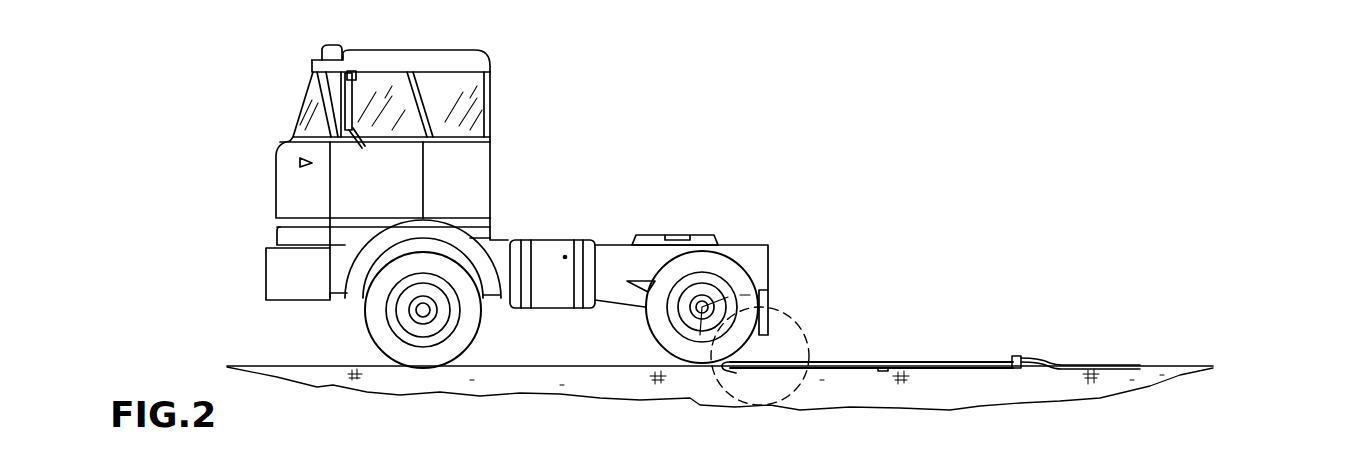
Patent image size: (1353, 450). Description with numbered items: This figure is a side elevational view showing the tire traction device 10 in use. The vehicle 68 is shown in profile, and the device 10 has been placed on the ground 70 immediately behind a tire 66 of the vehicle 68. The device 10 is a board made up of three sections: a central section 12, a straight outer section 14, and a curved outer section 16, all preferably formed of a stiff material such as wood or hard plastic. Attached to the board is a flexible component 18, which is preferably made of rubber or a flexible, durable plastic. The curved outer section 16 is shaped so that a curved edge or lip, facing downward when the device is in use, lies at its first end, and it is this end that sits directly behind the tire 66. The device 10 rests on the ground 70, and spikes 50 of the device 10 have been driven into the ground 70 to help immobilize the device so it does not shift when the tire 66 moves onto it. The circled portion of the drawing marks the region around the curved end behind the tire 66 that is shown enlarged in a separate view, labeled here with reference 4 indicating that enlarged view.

The tire traction device 10 is at (906, 324).
The detail region 4 is at (797, 330).
The central section 12 is at (835, 363).
The straight outer section 14 is at (950, 361).
The curved outer section 16 is at (732, 372).
The flexible component 18 is at (1090, 362).
The spikes 50 is at (882, 370).
The tire 66 is at (722, 262).
The vehicle 68 is at (475, 177).
The ground 70 is at (572, 373).